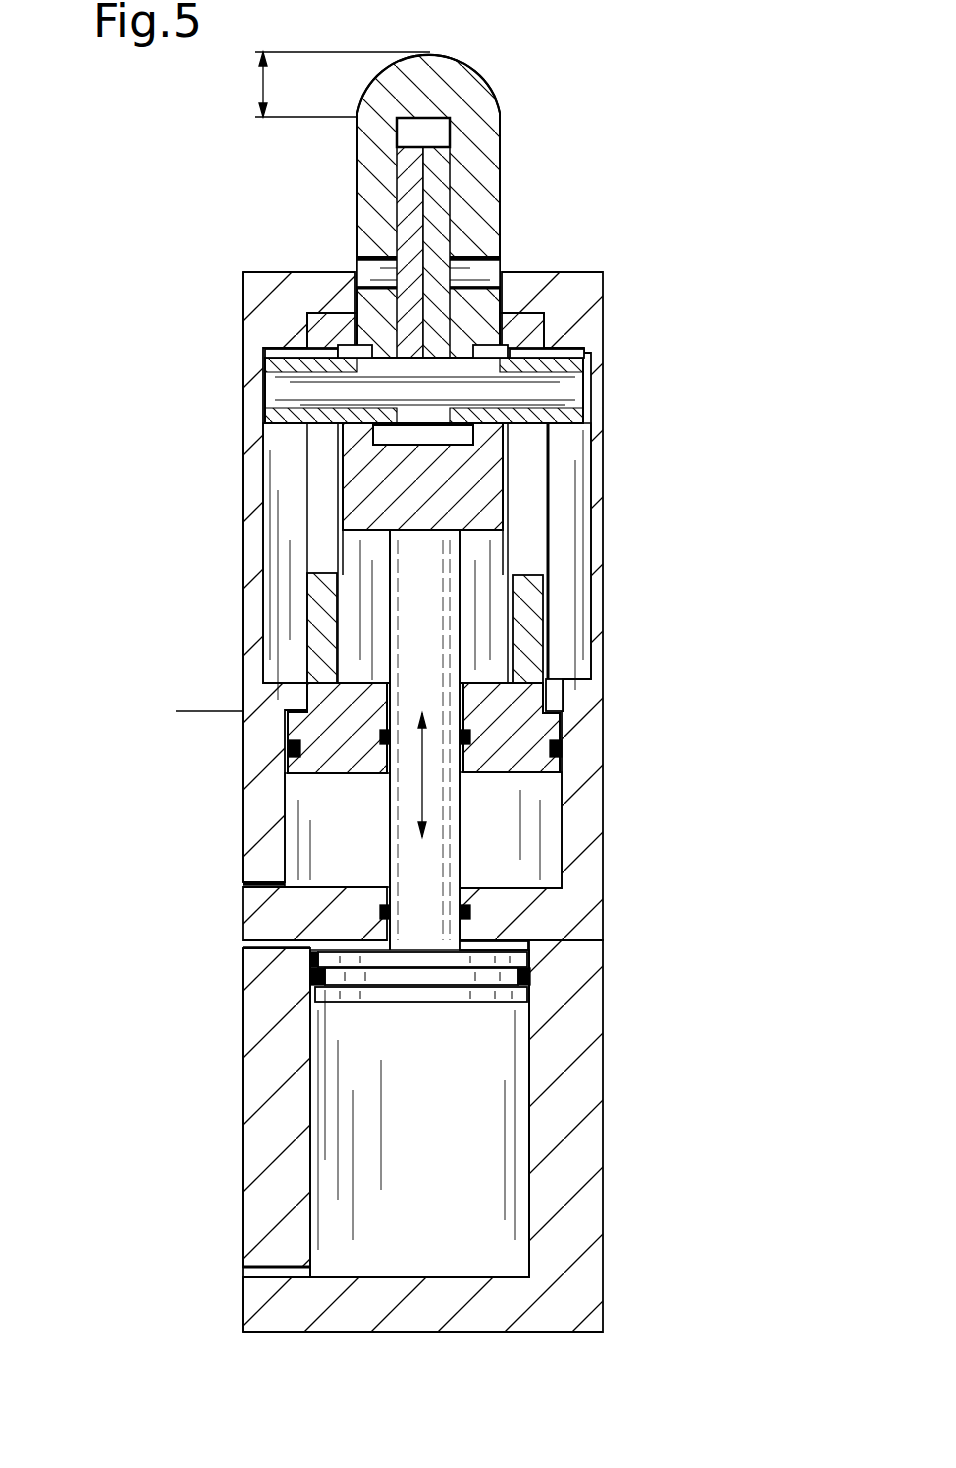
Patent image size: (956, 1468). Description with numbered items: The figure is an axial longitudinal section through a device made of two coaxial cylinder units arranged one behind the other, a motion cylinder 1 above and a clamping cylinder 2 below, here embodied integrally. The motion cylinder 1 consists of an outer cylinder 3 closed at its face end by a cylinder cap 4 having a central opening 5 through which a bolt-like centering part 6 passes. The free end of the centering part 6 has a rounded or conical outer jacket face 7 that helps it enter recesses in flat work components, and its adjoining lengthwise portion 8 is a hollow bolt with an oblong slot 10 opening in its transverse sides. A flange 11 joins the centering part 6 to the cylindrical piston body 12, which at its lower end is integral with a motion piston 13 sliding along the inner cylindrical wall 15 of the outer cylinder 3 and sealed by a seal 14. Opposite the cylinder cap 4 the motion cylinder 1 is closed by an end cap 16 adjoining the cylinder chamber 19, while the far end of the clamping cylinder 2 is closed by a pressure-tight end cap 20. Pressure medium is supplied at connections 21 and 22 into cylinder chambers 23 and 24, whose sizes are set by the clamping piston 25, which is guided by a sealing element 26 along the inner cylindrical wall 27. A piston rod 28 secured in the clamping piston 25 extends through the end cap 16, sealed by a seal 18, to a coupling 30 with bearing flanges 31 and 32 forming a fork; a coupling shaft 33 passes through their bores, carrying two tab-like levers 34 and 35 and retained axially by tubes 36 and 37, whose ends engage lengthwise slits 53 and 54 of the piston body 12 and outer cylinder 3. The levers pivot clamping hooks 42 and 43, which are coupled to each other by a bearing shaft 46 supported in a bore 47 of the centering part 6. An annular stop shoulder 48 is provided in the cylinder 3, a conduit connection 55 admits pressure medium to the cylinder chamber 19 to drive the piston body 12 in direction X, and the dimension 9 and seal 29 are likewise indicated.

The motion cylinder 1 is at (182, 514).
The clamping cylinder 2 is at (196, 1136).
The outer cylinder 3 is at (572, 698).
The cylinder cap 4 is at (260, 285).
The central opening 5 is at (505, 300).
The centering part 6 is at (437, 62).
The outer jacket face 7 is at (476, 73).
The lengthwise portion 8 is at (355, 230).
The dome height 9 is at (336, 84).
The oblong slot 10 is at (437, 135).
The flange 11 is at (314, 330).
The piston body 12 is at (319, 614).
The motion piston 13 is at (322, 758).
The seal 14 is at (563, 753).
The inner cylindrical wall 15 is at (547, 825).
The end cap 16 is at (270, 927).
The seal 18 is at (472, 912).
The cylinder chamber 19 is at (538, 868).
The end cap 20 is at (575, 1295).
The conduit connection 21 is at (242, 948).
The conduit connection 22 is at (242, 1268).
The cylinder chamber 23 is at (502, 1205).
The cylinder chamber 24 is at (520, 945).
The clamping piston 25 is at (485, 1000).
The sealing element 26 is at (532, 980).
The inner cylindrical wall 27 is at (505, 1095).
The piston rod 28 is at (400, 835).
The seal ring 29 is at (472, 738).
The coupling 30 is at (475, 493).
The bearing flange 31 is at (273, 354).
The bearing flange 32 is at (511, 354).
The coupling shaft 33 is at (278, 389).
The tab-like lever 34 is at (345, 429).
The tab-like lever 35 is at (474, 425).
The tube 36 is at (278, 420).
The tube 37 is at (584, 413).
The clamping hook 42 is at (420, 190).
The clamping hook 43 is at (435, 178).
The bearing shaft 46 is at (477, 270).
The bore 47 is at (470, 253).
The stop shoulder 48 is at (207, 709).
The lengthwise slit 53 is at (325, 511).
The lengthwise slit 54 is at (528, 545).
The conduit connection 55 is at (243, 887).